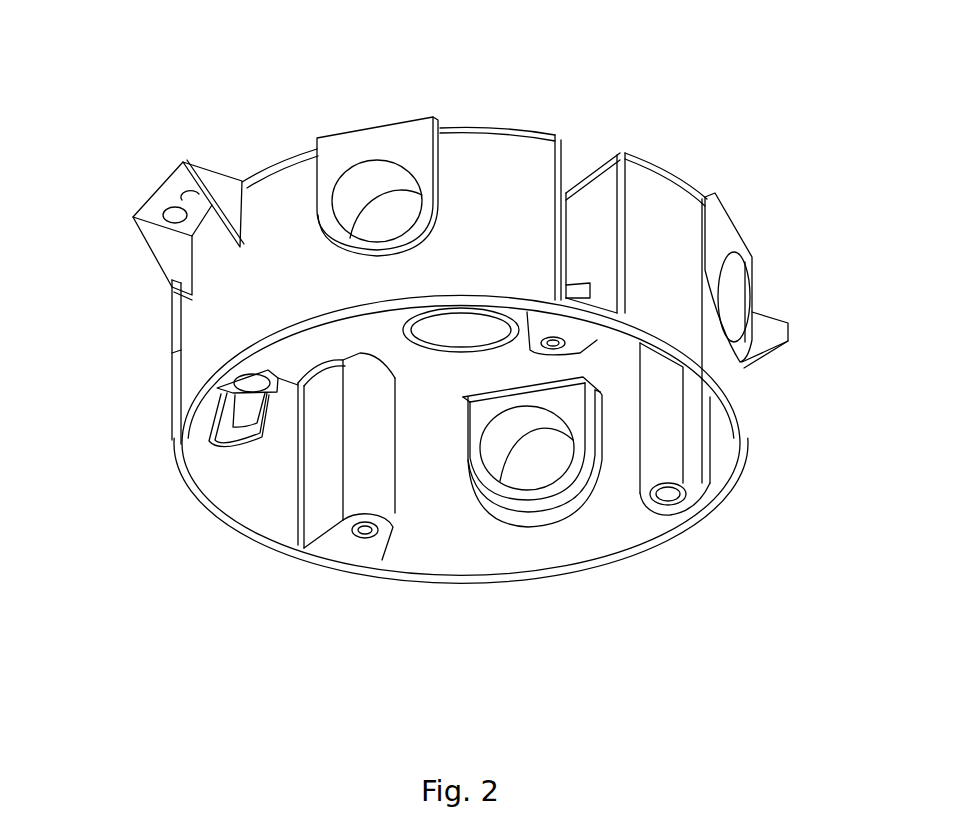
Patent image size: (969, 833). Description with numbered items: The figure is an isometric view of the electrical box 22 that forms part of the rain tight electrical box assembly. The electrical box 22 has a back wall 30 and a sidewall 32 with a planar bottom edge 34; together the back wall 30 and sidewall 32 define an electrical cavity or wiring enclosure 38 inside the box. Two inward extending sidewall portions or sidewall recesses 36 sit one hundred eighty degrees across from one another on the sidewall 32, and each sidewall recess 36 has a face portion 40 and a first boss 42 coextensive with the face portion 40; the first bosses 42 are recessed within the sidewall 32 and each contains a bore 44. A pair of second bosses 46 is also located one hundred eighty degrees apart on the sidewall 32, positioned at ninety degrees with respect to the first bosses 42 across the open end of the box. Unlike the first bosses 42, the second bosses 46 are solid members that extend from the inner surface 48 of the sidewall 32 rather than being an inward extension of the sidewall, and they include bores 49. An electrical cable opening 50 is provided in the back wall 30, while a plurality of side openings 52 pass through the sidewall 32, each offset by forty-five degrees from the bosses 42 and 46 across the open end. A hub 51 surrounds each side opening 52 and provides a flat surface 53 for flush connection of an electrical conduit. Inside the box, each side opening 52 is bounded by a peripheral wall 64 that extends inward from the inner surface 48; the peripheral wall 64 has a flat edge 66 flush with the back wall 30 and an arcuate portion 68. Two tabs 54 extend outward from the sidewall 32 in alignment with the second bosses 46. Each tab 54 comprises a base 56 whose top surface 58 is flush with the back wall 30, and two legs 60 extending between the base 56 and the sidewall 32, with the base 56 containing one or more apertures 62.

The electrical box 22 is at (170, 87).
The back wall 30 is at (421, 387).
The sidewall 32 is at (480, 225).
The planar bottom edge 34 is at (732, 463).
The sidewall recess 36 is at (597, 212).
The wiring enclosure 38 is at (605, 540).
The face portion 40 is at (330, 540).
The first boss 42 is at (573, 293).
The bore 44 is at (365, 532).
The second boss 46 is at (660, 405).
The inner surface 48 is at (433, 532).
The bore 49 is at (682, 496).
The electrical cable opening 50 is at (449, 337).
The hub 51 is at (440, 157).
The side opening 52 is at (730, 298).
The flat surface 53 is at (355, 148).
The tab 54 is at (790, 333).
The base 56 is at (153, 213).
The top surface 58 is at (217, 168).
The leg 60 is at (228, 205).
The aperture 62 is at (175, 218).
The peripheral wall 64 is at (570, 490).
The flat edge 66 is at (521, 392).
The arcuate portion 68 is at (535, 515).